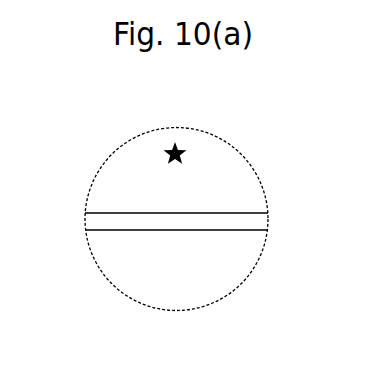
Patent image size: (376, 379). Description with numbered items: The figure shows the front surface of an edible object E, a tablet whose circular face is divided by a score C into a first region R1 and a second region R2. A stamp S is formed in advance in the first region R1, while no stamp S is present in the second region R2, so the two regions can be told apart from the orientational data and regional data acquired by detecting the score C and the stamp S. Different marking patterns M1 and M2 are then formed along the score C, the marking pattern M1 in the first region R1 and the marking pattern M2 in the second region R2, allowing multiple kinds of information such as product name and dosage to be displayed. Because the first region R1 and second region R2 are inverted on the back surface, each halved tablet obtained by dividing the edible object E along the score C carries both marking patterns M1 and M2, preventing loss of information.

The edible object E is at (247, 158).
The score C is at (268, 215).
The first region R1 is at (82, 150).
The second region R2 is at (268, 284).
The stamp S is at (165, 142).
The marking pattern M1 is at (140, 184).
The marking pattern M2 is at (122, 256).